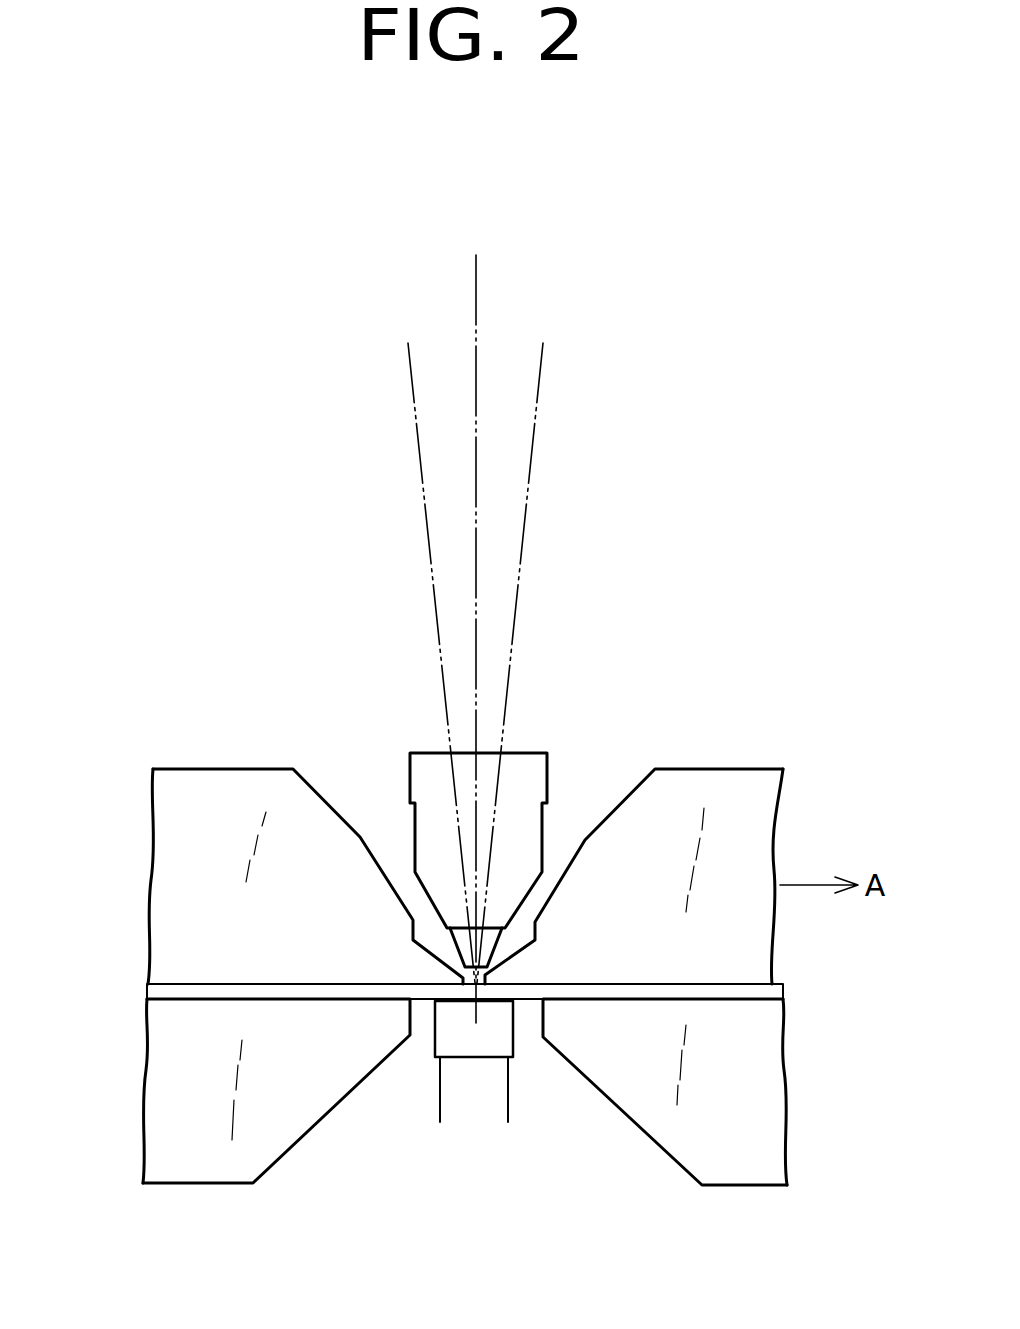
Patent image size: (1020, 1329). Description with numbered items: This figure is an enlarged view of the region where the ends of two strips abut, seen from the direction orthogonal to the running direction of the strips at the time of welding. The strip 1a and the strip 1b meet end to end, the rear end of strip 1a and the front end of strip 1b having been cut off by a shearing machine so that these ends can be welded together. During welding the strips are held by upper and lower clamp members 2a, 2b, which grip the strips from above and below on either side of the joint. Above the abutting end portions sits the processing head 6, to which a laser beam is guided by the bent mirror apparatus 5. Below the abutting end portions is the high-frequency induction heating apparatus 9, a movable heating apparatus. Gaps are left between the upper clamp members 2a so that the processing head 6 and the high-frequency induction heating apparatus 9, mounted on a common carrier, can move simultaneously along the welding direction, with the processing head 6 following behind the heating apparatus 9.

The strip 1a is at (752, 1000).
The strip 1b is at (195, 1000).
The upper clamp member 2a is at (322, 793).
The lower clamp member 2b is at (229, 1145).
The bent mirror apparatus 5 is at (525, 517).
The processing head 6 is at (527, 752).
The high-frequency induction heating apparatus 9 is at (502, 1033).